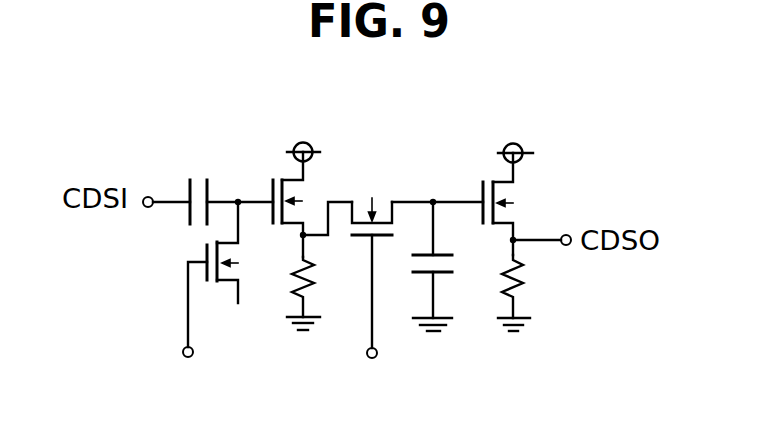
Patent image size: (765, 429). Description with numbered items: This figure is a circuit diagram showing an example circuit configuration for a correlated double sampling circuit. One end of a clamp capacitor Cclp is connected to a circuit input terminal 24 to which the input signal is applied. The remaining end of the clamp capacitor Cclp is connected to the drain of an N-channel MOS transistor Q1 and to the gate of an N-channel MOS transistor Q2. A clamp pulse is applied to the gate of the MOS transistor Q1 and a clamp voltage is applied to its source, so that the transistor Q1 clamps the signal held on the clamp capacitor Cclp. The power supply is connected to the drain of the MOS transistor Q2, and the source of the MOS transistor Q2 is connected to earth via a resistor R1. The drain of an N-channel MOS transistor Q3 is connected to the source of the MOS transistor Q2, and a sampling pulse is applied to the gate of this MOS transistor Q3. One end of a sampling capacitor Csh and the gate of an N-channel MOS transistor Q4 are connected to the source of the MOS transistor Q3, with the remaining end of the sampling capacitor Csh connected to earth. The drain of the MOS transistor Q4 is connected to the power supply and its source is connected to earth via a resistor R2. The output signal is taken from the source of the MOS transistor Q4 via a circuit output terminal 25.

The circuit input terminal 24 is at (147, 208).
The circuit output terminal 25 is at (566, 246).
The N-channel MOS transistor Q1 is at (226, 257).
The N-channel MOS transistor Q2 is at (292, 192).
The N channel MOS transistor Q3 is at (380, 206).
The N channel MOS transistor Q4 is at (503, 192).
The resistor R1 is at (319, 293).
The resistor R2 is at (498, 293).
The sampling capacitor Csh is at (412, 265).
The clamp capacitor Cclp is at (201, 176).